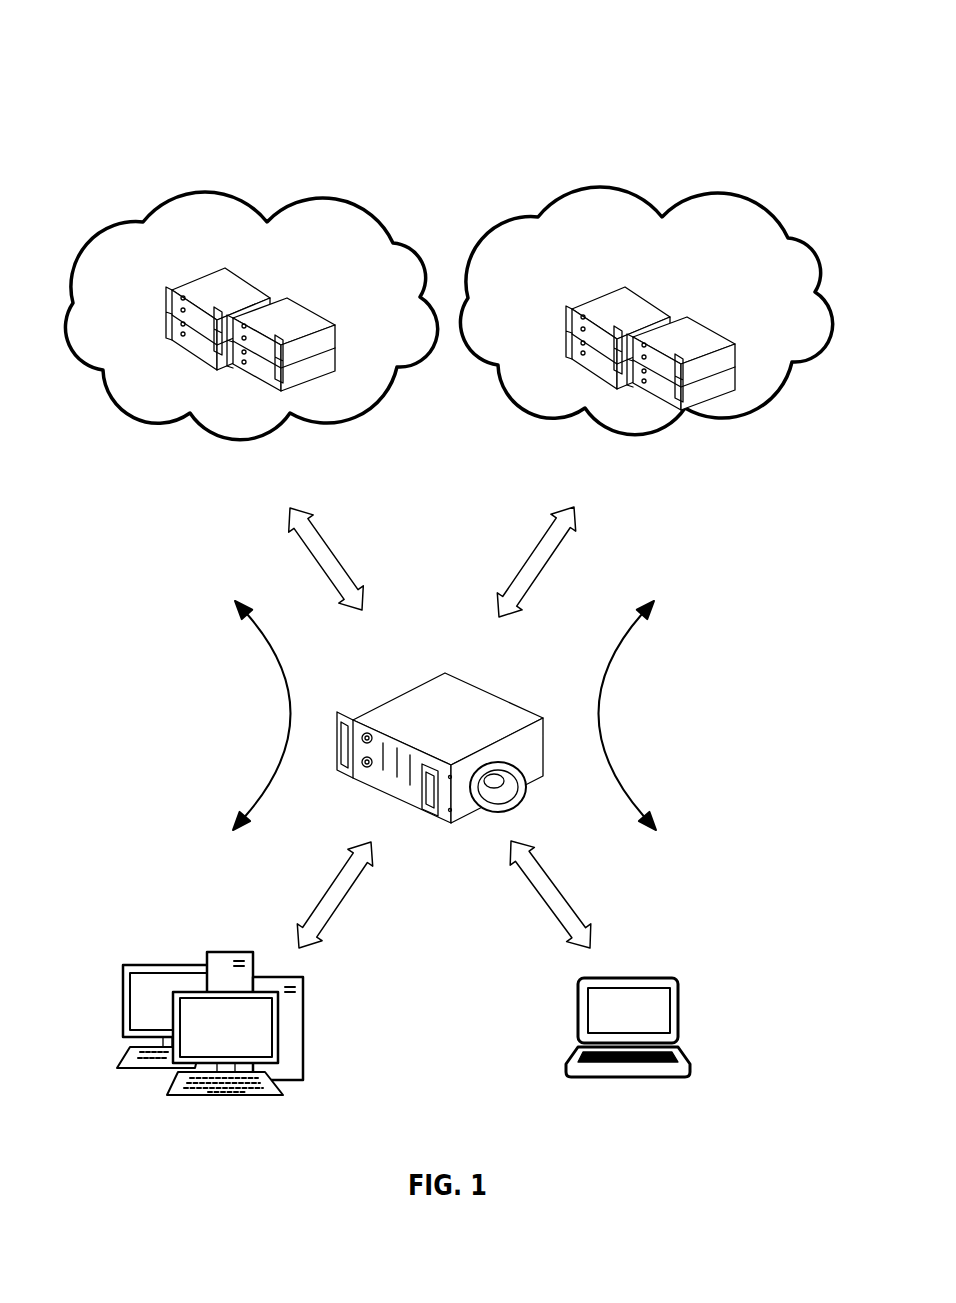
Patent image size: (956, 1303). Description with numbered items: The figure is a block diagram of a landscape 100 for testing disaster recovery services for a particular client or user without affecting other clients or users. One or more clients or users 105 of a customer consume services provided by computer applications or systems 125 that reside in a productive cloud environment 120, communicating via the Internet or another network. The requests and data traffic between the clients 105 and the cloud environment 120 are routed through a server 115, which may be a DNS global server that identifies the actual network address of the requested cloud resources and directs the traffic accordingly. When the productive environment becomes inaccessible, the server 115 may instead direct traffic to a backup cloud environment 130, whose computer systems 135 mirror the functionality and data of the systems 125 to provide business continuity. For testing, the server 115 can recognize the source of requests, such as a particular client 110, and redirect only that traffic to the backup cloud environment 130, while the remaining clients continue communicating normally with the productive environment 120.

The landscape 100 is at (487, 55).
The clients or users 105 is at (303, 1040).
The client 110 is at (640, 977).
The server 115 is at (507, 703).
The productive cloud environment 120 is at (217, 192).
The computer applications or systems 125 is at (260, 283).
The backup cloud environment 130 is at (597, 183).
The computer systems 135 is at (657, 297).